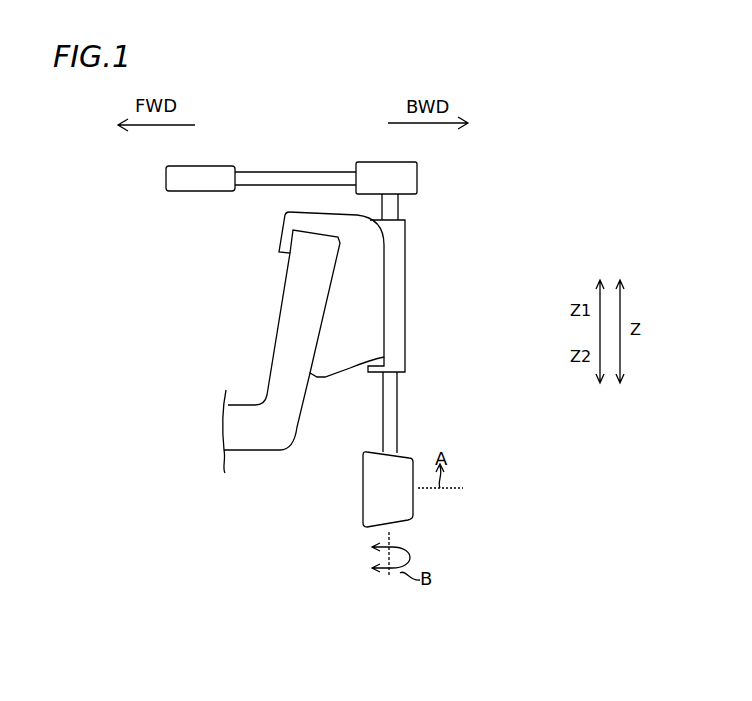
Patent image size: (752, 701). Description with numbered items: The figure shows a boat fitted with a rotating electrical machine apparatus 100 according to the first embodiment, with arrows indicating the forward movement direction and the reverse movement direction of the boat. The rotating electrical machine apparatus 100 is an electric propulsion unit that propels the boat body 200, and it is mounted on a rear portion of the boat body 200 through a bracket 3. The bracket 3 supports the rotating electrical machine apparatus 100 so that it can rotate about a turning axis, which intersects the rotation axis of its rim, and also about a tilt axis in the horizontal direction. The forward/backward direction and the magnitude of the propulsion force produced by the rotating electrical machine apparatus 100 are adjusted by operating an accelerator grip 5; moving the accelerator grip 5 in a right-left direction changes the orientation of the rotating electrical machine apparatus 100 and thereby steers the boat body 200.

The accelerator grip 5 is at (190, 183).
The bracket 3 is at (377, 244).
The boat body 200 is at (302, 429).
The rotating electrical machine apparatus 100 is at (444, 523).